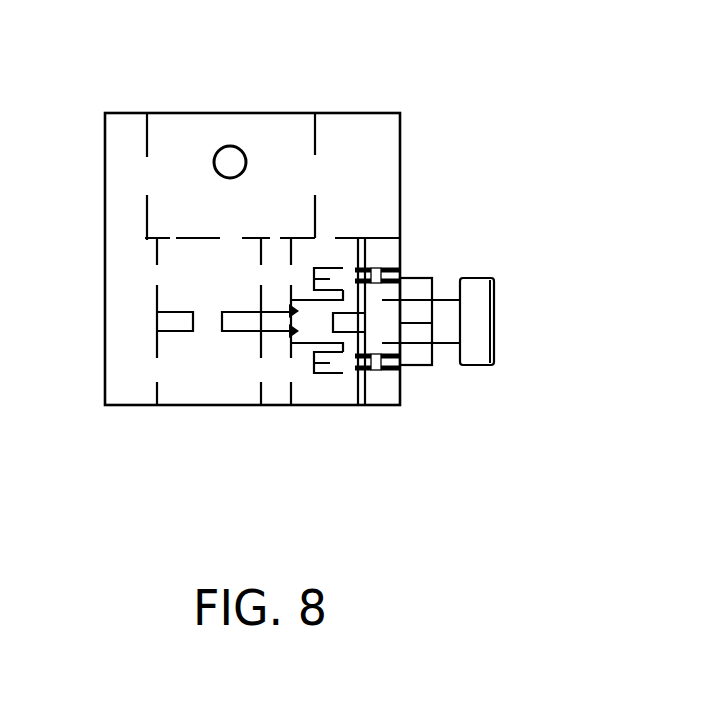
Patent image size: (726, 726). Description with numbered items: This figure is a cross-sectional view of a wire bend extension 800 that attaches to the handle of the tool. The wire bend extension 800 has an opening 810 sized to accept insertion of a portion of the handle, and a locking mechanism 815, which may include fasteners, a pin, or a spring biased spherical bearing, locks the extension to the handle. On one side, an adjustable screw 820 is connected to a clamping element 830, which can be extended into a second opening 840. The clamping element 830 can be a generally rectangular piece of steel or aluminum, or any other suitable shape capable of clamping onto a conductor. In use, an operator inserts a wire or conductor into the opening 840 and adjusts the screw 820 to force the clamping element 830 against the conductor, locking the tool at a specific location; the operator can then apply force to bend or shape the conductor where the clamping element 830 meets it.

The wire bend extension 800 is at (455, 54).
The opening 810 is at (283, 123).
The locking mechanism 815 is at (222, 152).
The adjustable screw 820 is at (478, 327).
The clamping element 830 is at (244, 323).
The opening 840 is at (236, 384).